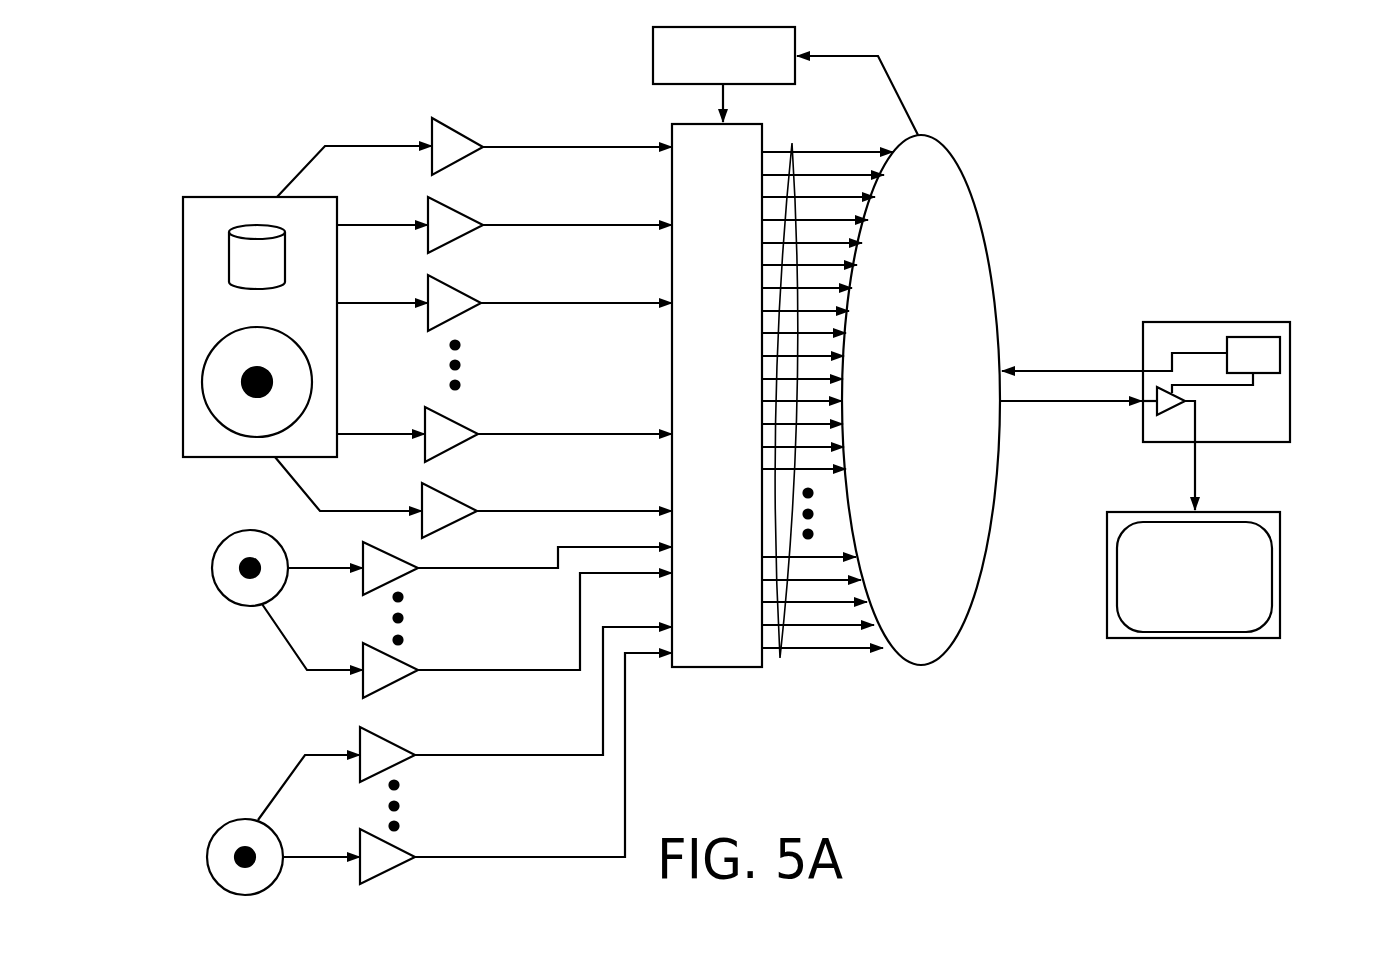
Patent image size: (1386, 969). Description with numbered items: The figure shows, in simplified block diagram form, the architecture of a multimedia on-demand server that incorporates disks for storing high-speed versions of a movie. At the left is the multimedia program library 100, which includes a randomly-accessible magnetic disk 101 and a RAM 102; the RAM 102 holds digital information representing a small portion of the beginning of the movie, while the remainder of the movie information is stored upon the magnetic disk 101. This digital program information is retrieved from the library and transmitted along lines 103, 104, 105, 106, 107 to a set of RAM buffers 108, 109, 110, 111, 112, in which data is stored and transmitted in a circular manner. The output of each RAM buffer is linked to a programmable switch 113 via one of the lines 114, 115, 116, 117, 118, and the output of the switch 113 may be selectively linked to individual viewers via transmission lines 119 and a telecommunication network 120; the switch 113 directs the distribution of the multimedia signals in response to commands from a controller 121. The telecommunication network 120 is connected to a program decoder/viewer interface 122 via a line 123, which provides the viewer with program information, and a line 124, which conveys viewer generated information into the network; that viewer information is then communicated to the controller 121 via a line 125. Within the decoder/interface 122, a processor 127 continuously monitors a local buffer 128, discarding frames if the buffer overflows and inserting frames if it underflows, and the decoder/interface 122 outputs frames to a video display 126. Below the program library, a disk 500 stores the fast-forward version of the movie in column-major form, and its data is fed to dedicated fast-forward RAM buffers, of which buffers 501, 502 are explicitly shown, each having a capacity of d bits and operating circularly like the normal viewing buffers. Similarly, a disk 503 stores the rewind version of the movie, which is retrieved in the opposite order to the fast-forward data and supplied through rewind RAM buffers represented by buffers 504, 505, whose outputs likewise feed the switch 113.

The multimedia program library 100 is at (233, 205).
The magnetic disk 101 is at (257, 382).
The RAM 102 is at (257, 257).
The line 103 is at (398, 140).
The line 104 is at (397, 219).
The line 105 is at (395, 297).
The line 106 is at (390, 428).
The line 107 is at (390, 505).
The RAM buffer 108 is at (450, 150).
The RAM buffer 109 is at (448, 230).
The RAM buffer 110 is at (448, 308).
The RAM buffer 111 is at (445, 440).
The RAM buffer 112 is at (470, 532).
The switch 113 is at (717, 395).
The line 114 is at (588, 147).
The line 115 is at (588, 225).
The line 116 is at (585, 303).
The line 117 is at (583, 434).
The line 118 is at (583, 511).
The transmission lines 119 is at (783, 660).
The telecommunication network 120 is at (921, 400).
The controller 121 is at (724, 74).
The program decoder/viewer interface 122 is at (1216, 416).
The line 123 is at (1038, 403).
The line 124 is at (1055, 368).
The line 125 is at (903, 100).
The video display 126 is at (1290, 620).
The processor 127 is at (1258, 343).
The local buffer 128 is at (1160, 418).
The disk 500 is at (233, 545).
The fast-forward RAM buffer 501 is at (372, 555).
The fast-forward RAM buffer 502 is at (390, 680).
The disk 503 is at (238, 830).
The rewind RAM buffer 504 is at (365, 745).
The rewind RAM buffer 505 is at (418, 843).